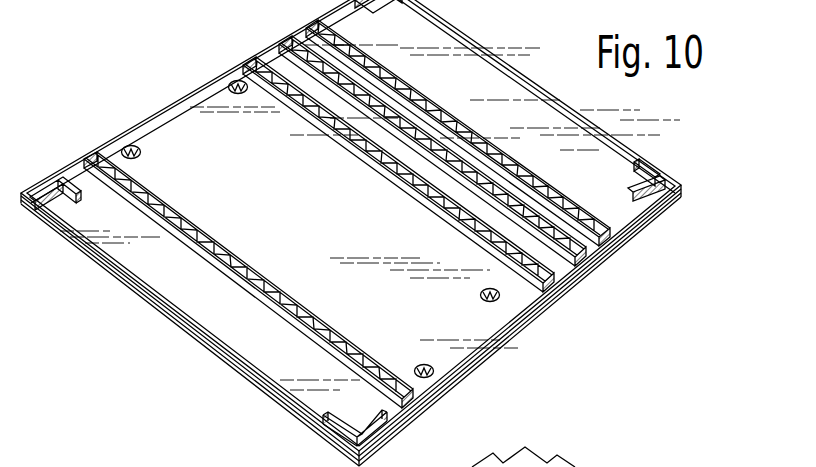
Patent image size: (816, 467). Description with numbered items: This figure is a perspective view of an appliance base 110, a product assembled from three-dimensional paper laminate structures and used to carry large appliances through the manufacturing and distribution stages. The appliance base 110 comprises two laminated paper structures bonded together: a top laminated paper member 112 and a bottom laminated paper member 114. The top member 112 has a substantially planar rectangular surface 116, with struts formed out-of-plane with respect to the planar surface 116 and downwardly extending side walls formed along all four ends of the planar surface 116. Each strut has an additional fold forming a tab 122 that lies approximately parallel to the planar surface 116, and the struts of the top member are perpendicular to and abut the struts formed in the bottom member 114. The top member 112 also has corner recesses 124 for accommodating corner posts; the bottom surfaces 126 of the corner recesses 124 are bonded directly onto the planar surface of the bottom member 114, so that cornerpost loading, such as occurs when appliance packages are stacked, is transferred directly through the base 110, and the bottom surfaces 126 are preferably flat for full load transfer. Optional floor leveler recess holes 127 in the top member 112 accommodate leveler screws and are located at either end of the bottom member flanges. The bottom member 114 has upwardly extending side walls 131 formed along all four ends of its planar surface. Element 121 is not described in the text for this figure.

The appliance base 110 is at (202, 395).
The top laminated paper member 112 is at (158, 287).
The bottom laminated paper member 114 is at (192, 333).
The planar rectangular surface 116 is at (182, 122).
The bottom corner bracket 121 is at (343, 447).
The tab 122 is at (598, 466).
The corner recess 124 is at (669, 173).
The bottom surface of corner recess 126 is at (43, 193).
The floor leveler recess hole 127 is at (234, 82).
The upwardly extending side wall 131 is at (628, 234).